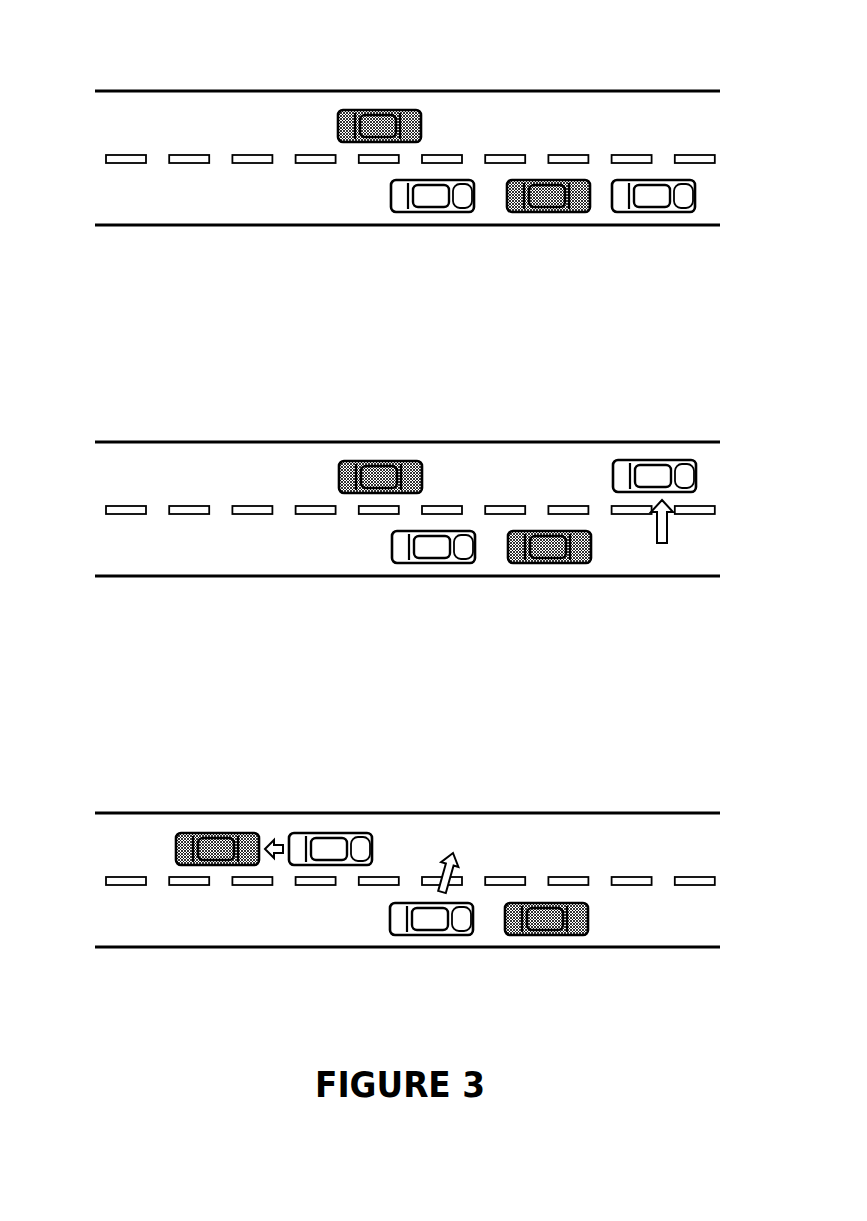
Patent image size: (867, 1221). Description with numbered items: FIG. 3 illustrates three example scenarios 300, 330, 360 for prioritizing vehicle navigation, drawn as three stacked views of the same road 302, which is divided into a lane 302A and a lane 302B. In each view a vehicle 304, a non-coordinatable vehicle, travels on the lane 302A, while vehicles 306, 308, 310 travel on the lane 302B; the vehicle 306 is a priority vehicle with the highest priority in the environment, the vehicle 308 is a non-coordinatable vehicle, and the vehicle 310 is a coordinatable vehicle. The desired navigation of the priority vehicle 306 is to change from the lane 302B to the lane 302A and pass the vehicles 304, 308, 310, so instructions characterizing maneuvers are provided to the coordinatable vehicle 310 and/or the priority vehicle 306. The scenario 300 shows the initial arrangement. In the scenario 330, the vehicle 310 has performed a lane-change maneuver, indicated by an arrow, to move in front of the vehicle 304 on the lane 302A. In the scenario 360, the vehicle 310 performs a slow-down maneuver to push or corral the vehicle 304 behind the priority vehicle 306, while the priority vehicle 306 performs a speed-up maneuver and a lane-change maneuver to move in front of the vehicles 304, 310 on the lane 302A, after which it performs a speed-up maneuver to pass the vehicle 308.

The scenario 300 is at (745, 26).
The scenario 330 is at (720, 451).
The scenario 360 is at (527, 814).
The road 302 is at (453, 90).
The lane 302A is at (92, 118).
The lane 302B is at (92, 224).
The vehicle 304 is at (373, 110).
The priority vehicle 306 is at (427, 212).
The vehicle 308 is at (545, 212).
The coordinatable vehicle 310 is at (647, 212).